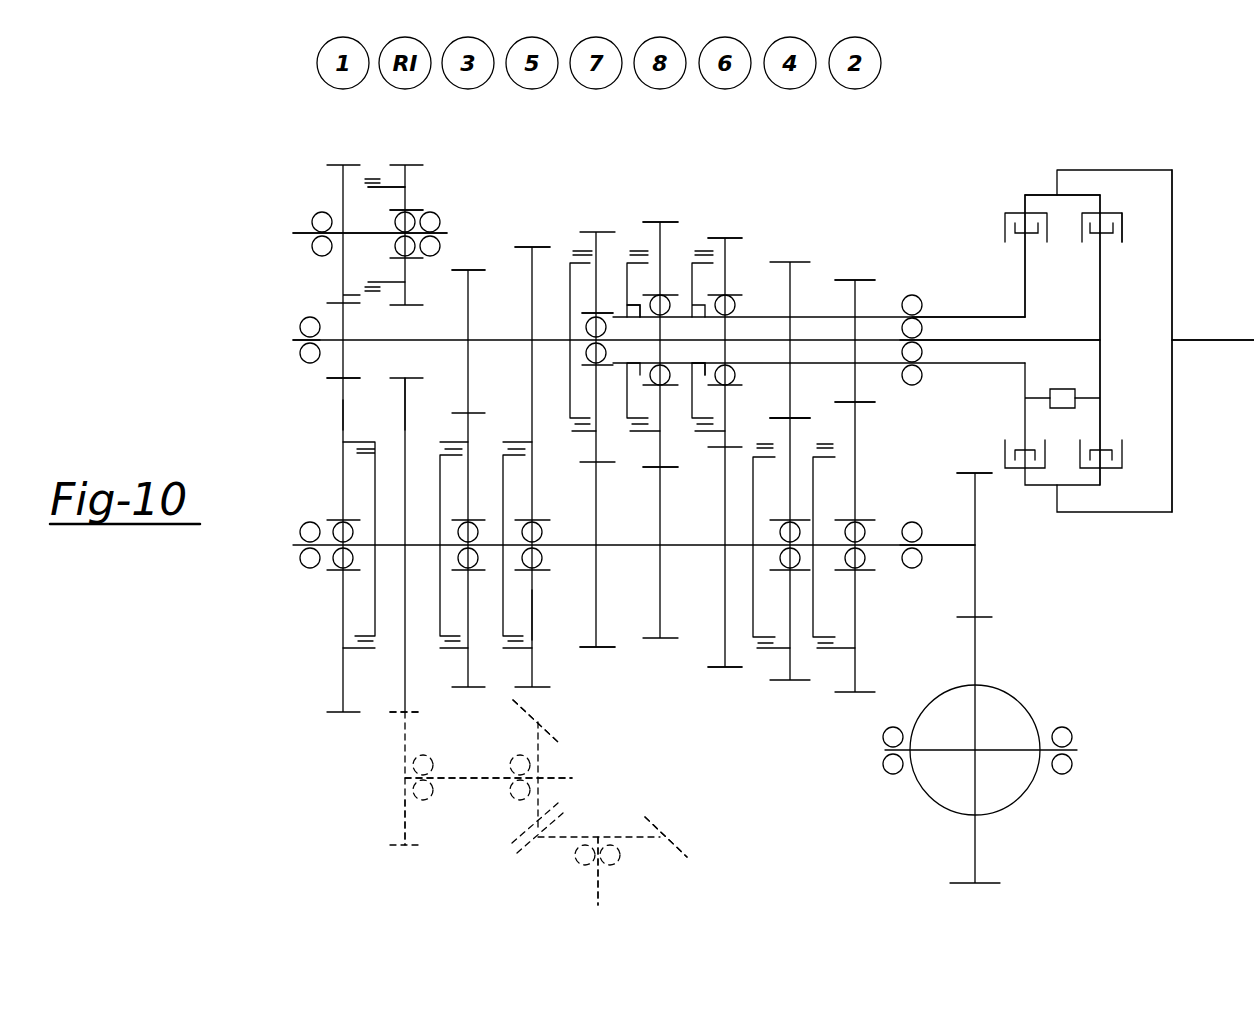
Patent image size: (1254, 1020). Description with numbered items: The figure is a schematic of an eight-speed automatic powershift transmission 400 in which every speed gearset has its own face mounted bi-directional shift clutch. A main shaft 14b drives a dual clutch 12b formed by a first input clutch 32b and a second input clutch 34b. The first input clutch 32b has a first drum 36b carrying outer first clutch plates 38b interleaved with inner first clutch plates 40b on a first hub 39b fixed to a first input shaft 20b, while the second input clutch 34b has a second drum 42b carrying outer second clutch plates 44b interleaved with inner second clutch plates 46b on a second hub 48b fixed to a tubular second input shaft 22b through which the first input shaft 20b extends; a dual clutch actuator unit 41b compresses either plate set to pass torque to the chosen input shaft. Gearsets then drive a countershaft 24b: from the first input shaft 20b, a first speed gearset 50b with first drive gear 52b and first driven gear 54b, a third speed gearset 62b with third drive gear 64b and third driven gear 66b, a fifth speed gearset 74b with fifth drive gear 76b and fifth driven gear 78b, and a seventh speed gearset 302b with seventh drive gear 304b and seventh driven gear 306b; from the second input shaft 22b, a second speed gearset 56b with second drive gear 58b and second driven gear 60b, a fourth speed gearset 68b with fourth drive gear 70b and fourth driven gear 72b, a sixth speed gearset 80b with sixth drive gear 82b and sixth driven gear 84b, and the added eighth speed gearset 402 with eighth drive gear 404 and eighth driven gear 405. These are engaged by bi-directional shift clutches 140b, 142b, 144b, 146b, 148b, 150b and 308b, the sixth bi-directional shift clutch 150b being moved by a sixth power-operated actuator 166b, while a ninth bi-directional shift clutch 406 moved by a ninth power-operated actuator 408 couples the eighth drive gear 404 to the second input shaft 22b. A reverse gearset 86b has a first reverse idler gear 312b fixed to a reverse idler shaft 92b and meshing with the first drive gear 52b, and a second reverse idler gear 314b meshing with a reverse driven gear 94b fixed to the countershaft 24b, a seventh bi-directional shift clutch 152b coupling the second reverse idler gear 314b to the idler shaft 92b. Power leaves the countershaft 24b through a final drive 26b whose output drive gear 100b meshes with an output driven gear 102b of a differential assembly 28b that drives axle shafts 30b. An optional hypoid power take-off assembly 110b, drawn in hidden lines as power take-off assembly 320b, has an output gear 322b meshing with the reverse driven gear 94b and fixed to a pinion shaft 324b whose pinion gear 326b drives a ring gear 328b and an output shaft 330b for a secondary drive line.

The eight-speed automatic powershift transmission 400 is at (188, 138).
The first speed gearset 50b is at (328, 150).
The reverse gearset 86b is at (402, 153).
The first reverse idler gear 312b is at (340, 190).
The second reverse idler gear 314b is at (410, 180).
The reverse idler shaft 92b is at (300, 236).
The third speed gearset 62b is at (462, 262).
The third drive gear 64b is at (465, 293).
The third driven gear 66b is at (468, 415).
The fifth speed gearset 74b is at (530, 240).
The fifth drive gear 76b is at (532, 262).
The fifth driven gear 78b is at (533, 615).
The seventh speed gearset 302b is at (598, 225).
The seventh drive gear 304b is at (597, 283).
The seventh driven gear 306b is at (598, 582).
The eighth bi-directional shift clutch 308b is at (578, 440).
The eighth speed gearset 402 is at (660, 218).
The eighth drive gear 404 is at (662, 243).
The eighth driven gear 405 is at (660, 532).
The ninth bi-directional shift clutch 406 is at (631, 440).
The ninth power-operated actuator 408 is at (643, 322).
The sixth speed gearset 80b is at (720, 233).
The sixth drive gear 82b is at (735, 265).
The sixth driven gear 84b is at (722, 634).
The sixth bi-directional shift clutch 150b is at (706, 445).
The sixth power-operated actuator 166b is at (700, 368).
The fourth speed gearset 68b is at (782, 258).
The fourth drive gear 70b is at (790, 312).
The fourth driven gear 72b is at (790, 418).
The fourth bi-directional shift clutch 146b is at (760, 660).
The second speed gearset 56b is at (838, 272).
The second drive gear 58b is at (855, 312).
The second driven gear 60b is at (857, 412).
The second bi-directional shift clutch 142b is at (820, 660).
The first bi-directional shift clutch 140b is at (375, 660).
The third bi-directional shift clutch 144b is at (440, 660).
The fifth bi-directional shift clutch 148b is at (505, 660).
The seventh bi-directional shift clutch 152b is at (360, 312).
The reverse driven gear 94b is at (405, 412).
The first drive gear 52b is at (328, 378).
The first driven gear 54b is at (340, 413).
The second input shaft 22b is at (912, 318).
The first input shaft 20b is at (1087, 340).
The main shaft 14b is at (1210, 340).
The countershaft 24b is at (950, 546).
The dual clutch 12b is at (1112, 155).
The first input clutch 32b is at (1155, 215).
The second input clutch 34b is at (1000, 188).
The first drum 36b is at (1117, 205).
The outer first clutch plates 38b is at (1125, 232).
The first hub 39b is at (1103, 308).
The inner first clutch plates 40b is at (1090, 233).
The dual clutch actuator unit 41b is at (1078, 363).
The second drum 42b is at (1035, 195).
The outer second clutch plates 44b is at (1005, 217).
The inner second clutch plates 46b is at (1038, 232).
The second hub 48b is at (1025, 252).
The final drive 26b is at (993, 575).
The output drive gear 100b is at (975, 493).
The output driven gear 102b is at (978, 636).
The differential assembly 28b is at (1040, 815).
The axle shafts 30b is at (1010, 750).
The hypoid power take-off assembly 110b is at (318, 752).
The power take-off assembly 320b is at (615, 733).
The output gear 322b is at (405, 820).
The pinion shaft 324b is at (462, 782).
The pinion gear 326b is at (562, 745).
The ring gear 328b is at (652, 822).
The output shaft 330b is at (600, 888).